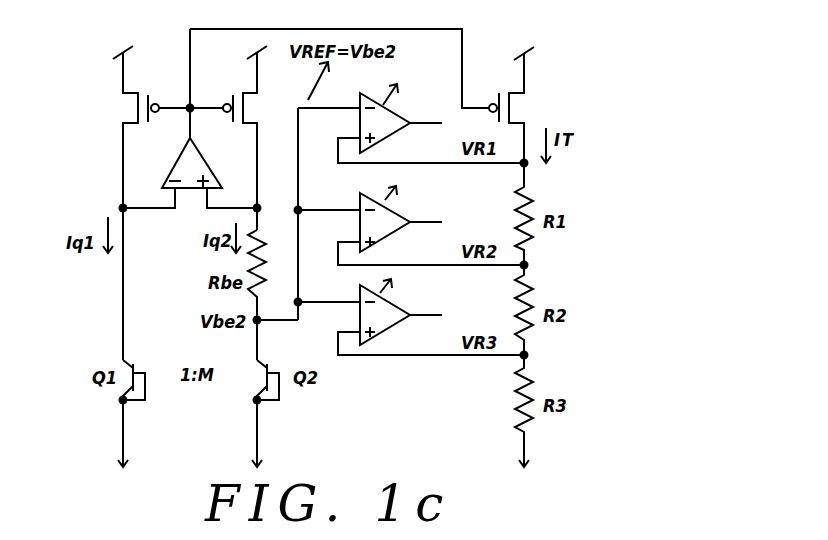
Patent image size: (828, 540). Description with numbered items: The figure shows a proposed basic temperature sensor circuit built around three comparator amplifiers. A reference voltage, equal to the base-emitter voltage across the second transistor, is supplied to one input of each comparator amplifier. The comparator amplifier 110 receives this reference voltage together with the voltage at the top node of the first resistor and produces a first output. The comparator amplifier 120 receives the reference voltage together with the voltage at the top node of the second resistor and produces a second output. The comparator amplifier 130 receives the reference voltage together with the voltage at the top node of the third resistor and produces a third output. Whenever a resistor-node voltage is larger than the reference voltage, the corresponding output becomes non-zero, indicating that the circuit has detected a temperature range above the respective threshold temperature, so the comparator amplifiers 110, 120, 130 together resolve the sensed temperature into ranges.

The comparator amplifier 110 is at (389, 130).
The comparator amplifier 120 is at (389, 227).
The comparator amplifier 130 is at (389, 322).